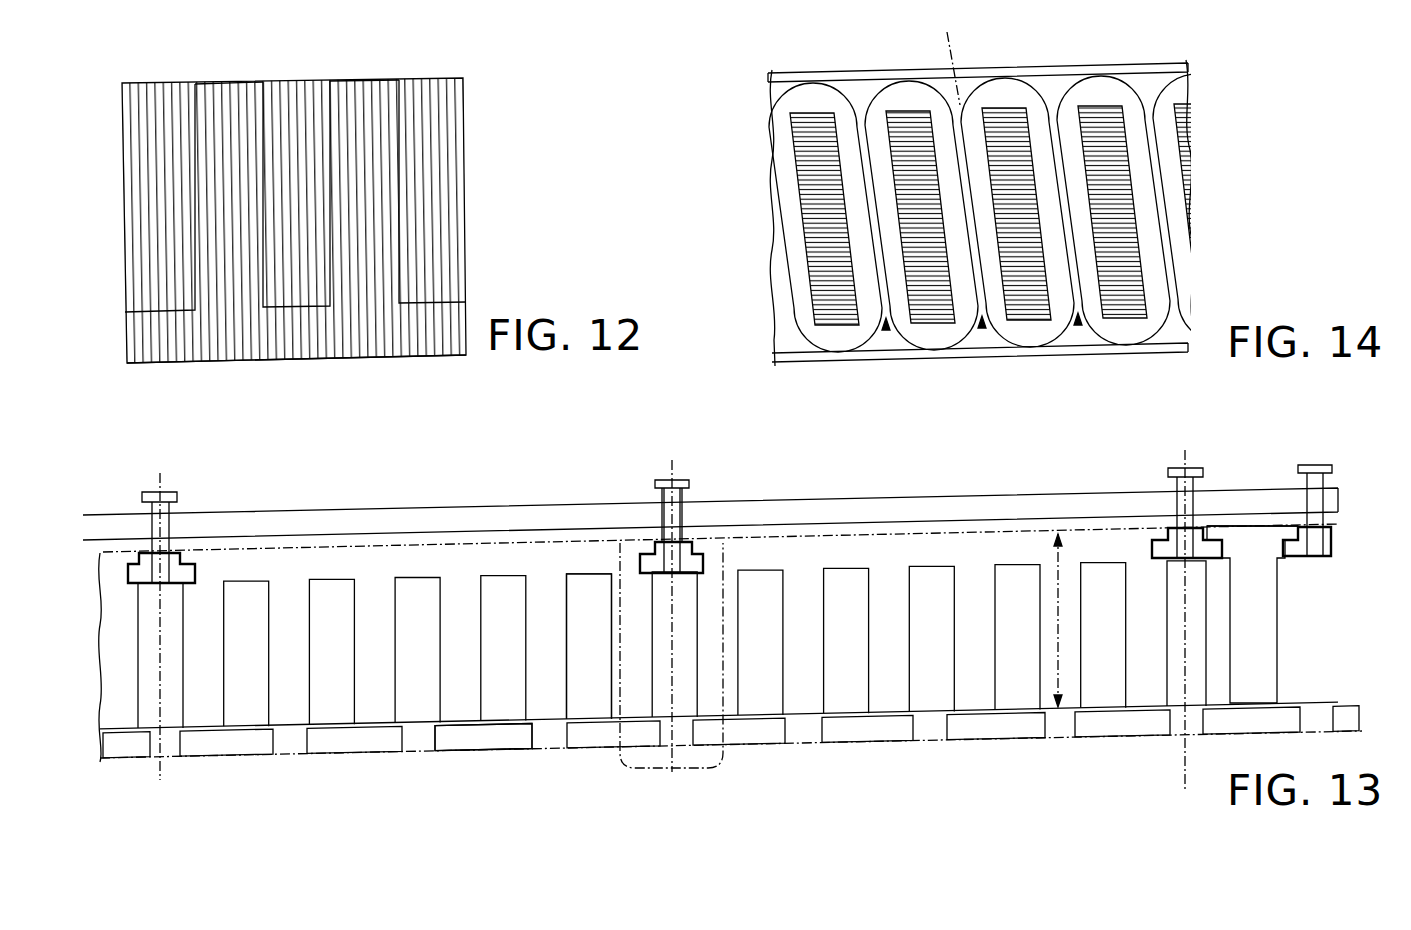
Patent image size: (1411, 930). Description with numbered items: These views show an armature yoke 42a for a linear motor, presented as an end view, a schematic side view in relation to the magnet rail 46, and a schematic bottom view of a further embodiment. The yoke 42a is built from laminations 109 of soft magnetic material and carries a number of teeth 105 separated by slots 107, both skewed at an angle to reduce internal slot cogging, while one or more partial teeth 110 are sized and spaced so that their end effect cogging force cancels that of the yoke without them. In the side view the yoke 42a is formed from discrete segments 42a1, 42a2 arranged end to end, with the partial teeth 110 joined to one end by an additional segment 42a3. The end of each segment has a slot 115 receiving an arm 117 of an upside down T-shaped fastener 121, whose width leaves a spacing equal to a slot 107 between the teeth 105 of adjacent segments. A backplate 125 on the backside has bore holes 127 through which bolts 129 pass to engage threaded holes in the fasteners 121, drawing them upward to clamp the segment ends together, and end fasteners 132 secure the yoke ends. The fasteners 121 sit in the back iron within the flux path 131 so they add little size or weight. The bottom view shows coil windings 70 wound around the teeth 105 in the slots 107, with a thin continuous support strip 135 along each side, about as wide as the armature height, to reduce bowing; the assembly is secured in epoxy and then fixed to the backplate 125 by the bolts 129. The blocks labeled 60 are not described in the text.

In FIG. 12, the armature yoke 42a is at (107, 90).
In FIG. 13, the armature yoke 42a is at (197, 802).
In FIG. 14, the discrete yoke segment 42a1 is at (843, 64).
In FIG. 13, the discrete yoke segment 42a1 is at (330, 573).
In FIG. 14, the discrete yoke segment 42a2 is at (1063, 57).
In FIG. 13, the discrete yoke segment 42a2 is at (885, 550).
In FIG. 13, the additional segment 42a3 is at (1250, 535).
In FIG. 13, the magnet rail 46 is at (420, 745).
In FIG. 13, the back iron block 60 is at (235, 745).
In FIG. 14, the coil windings 70 is at (943, 100).
In FIG. 12, the teeth 105 is at (180, 84).
In FIG. 14, the teeth 105 is at (842, 327).
In FIG. 13, the teeth 105 is at (210, 705).
In FIG. 14, the slots 107 is at (886, 331).
In FIG. 13, the slots 107 is at (250, 705).
In FIG. 12, the laminations 109 is at (453, 358).
In FIG. 12, the partial teeth 110 is at (226, 83).
In FIG. 13, the partial teeth 110 is at (1253, 680).
In FIG. 13, the slot 115 is at (185, 498).
In FIG. 13, the arm 117 is at (170, 492).
In FIG. 13, the T-shaped fastener 121 is at (685, 548).
In FIG. 13, the backplate 125 is at (410, 527).
In FIG. 13, the bore holes 127 is at (665, 518).
In FIG. 13, the bolts 129 is at (150, 492).
In FIG. 13, the flux path 131 is at (605, 665).
In FIG. 13, the end fasteners 132 is at (1330, 540).
In FIG. 14, the support strip 135 is at (780, 76).